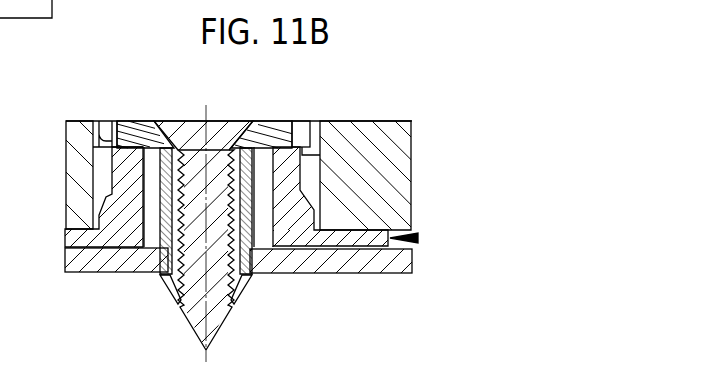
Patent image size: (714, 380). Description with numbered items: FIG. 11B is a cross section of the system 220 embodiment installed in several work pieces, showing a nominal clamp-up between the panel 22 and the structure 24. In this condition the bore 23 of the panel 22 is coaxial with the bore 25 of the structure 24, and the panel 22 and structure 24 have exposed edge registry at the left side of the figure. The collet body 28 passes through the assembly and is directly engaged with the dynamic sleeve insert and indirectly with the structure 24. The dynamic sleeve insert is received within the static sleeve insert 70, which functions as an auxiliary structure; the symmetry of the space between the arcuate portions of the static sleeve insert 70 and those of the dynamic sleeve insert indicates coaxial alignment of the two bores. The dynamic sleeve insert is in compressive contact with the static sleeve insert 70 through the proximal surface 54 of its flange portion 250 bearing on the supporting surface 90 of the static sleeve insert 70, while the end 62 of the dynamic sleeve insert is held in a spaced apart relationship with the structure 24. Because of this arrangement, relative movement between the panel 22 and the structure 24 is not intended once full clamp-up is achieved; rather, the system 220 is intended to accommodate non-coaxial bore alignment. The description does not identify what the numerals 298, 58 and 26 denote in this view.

The panel 22 is at (373, 138).
The system 220 is at (362, 98).
The flange portion 250 is at (268, 120).
The washer 298 is at (295, 130).
The tab 58 is at (110, 120).
The supporting surface 90 is at (105, 133).
The bore 23 is at (105, 176).
The proximal surface 54 is at (274, 150).
The static sleeve insert 70 is at (418, 238).
The bore 25 is at (157, 258).
The structure 24 is at (352, 267).
The collet body 28 is at (160, 287).
The end 62 is at (252, 248).
The screw 26 is at (218, 327).